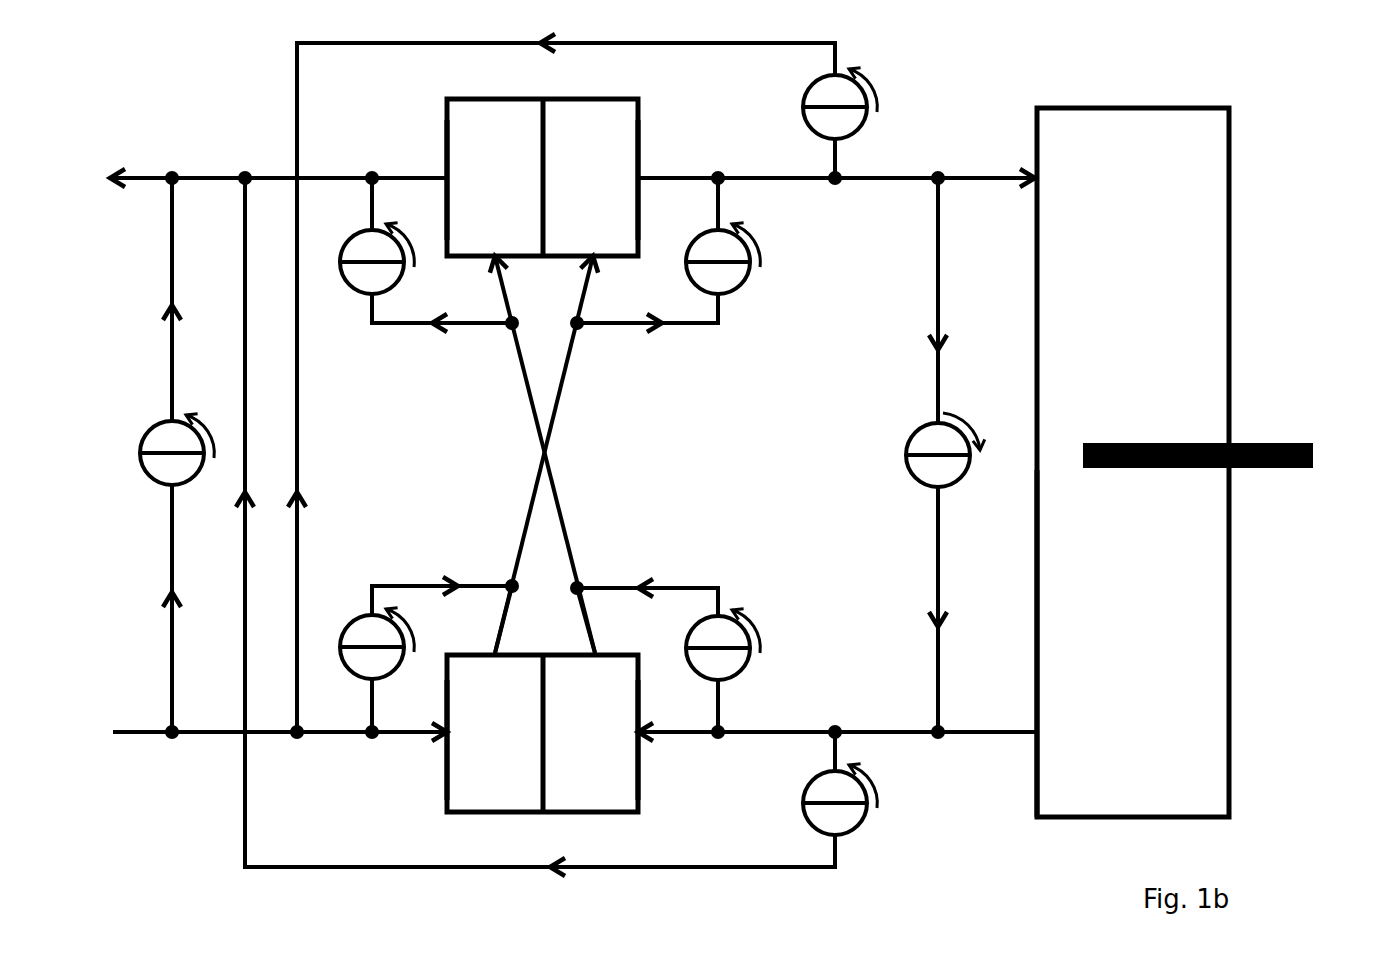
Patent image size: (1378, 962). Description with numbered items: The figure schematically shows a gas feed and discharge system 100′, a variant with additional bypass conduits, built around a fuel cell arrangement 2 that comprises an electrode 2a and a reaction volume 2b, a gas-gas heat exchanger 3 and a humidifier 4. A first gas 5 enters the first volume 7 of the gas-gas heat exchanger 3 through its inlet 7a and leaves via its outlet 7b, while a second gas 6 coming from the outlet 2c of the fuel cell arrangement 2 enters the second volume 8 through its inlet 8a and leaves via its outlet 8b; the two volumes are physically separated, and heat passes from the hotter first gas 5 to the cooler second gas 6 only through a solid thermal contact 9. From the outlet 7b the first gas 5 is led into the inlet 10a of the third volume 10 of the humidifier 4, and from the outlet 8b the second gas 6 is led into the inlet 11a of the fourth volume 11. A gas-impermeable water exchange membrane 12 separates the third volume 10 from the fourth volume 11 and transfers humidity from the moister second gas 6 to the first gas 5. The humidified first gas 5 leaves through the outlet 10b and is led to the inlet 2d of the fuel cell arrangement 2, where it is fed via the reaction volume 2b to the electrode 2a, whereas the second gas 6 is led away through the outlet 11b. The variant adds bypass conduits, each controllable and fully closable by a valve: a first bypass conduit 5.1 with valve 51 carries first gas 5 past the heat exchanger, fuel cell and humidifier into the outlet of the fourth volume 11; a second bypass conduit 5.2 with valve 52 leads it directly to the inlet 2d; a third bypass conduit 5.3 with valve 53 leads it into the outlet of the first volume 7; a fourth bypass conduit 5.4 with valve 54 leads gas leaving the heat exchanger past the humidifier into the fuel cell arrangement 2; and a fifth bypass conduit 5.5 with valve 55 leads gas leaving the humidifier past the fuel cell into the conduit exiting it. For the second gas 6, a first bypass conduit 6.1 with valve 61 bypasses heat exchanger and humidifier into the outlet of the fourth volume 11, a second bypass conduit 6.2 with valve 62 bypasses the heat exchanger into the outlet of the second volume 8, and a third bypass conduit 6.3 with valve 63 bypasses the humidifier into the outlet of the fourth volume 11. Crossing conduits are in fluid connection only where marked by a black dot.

The fuel cell arrangement 2 is at (1230, 707).
The electrode 2a is at (1253, 443).
The reaction volume 2b is at (1090, 643).
The outlet of the fuel cell arrangement 2c is at (1038, 735).
The inlet of the fuel cell arrangement 2d is at (1038, 178).
The gas-gas heat exchanger 3 is at (432, 806).
The humidifier 4 is at (653, 131).
The first gas 5 is at (138, 735).
The first bypass conduit 5.1 is at (168, 562).
The second bypass conduit 5.2 is at (300, 472).
The third bypass conduit 5.3 is at (392, 583).
The fourth bypass conduit 5.4 is at (690, 330).
The fifth bypass conduit 5.5 is at (937, 557).
The second gas 6 is at (205, 177).
The first bypass conduit for the second gas 6.1 is at (243, 310).
The second bypass conduit for the second gas 6.2 is at (695, 585).
The third bypass conduit for the second gas 6.3 is at (410, 335).
The first volume 7 is at (471, 740).
The inlet of the first volume 7a is at (432, 743).
The outlet of the first volume 7b is at (493, 653).
The second volume 8 is at (609, 740).
The inlet of the second volume 8a is at (643, 738).
The outlet of the second volume 8b is at (597, 652).
The thermal contact 9 is at (546, 790).
The third volume 10 is at (607, 180).
The inlet of the third volume 10a is at (600, 259).
The outlet of the third volume 10b is at (640, 177).
The fourth volume 11 is at (478, 180).
The inlet of the fourth volume 11a is at (493, 259).
The outlet of the fourth volume 11b is at (445, 176).
The water exchange membrane 12 is at (543, 137).
The valve 51 is at (150, 432).
The valve 52 is at (858, 82).
The valve 53 is at (350, 673).
The valve 54 is at (743, 287).
The valve 55 is at (915, 433).
The valve 61 is at (860, 828).
The valve 62 is at (743, 673).
The valve 63 is at (350, 287).
The gas feed and discharge system 100′ is at (1256, 158).